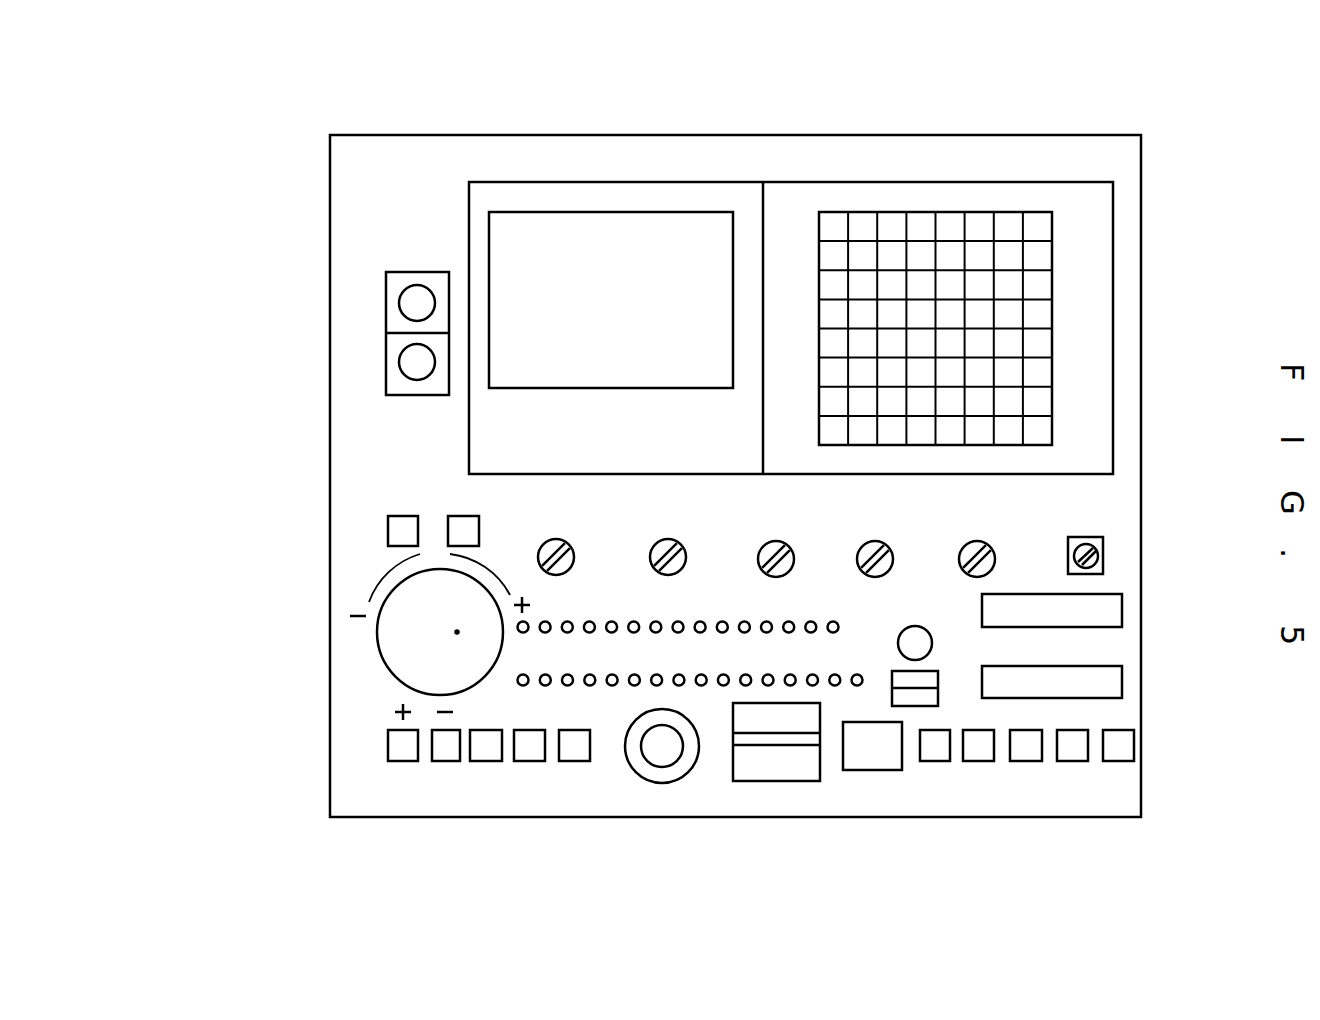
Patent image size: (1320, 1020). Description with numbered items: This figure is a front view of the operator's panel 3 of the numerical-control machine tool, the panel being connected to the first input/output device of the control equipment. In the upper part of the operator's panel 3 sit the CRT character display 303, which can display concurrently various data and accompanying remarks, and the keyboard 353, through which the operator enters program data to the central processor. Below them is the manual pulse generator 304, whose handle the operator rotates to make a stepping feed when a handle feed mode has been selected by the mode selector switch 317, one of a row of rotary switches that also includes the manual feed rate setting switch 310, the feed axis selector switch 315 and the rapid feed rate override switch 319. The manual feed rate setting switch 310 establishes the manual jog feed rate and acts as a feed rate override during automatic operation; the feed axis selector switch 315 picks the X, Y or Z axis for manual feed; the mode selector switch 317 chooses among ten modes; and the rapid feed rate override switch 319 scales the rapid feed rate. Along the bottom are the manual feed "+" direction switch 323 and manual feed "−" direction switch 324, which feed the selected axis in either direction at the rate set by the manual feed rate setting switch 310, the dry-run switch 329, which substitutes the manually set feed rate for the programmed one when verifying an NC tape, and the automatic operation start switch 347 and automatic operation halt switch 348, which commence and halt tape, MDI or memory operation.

The operator's panel 3 is at (300, 194).
The CRT character display 303 is at (588, 240).
The keyboard 353 is at (927, 257).
The manual pulse generator 304 is at (397, 642).
The manual feed rate setting switch 310 is at (565, 542).
The feed axis selector switch 315 is at (677, 543).
The mode selector switch 317 is at (773, 547).
The rapid feed rate override switch 319 is at (877, 547).
The manual feed "+" direction switch 323 is at (403, 745).
The manual feed "−" direction switch 324 is at (445, 745).
The dry-run switch 329 is at (570, 682).
The automatic operation start switch 347 is at (933, 753).
The automatic operation halt switch 348 is at (980, 742).